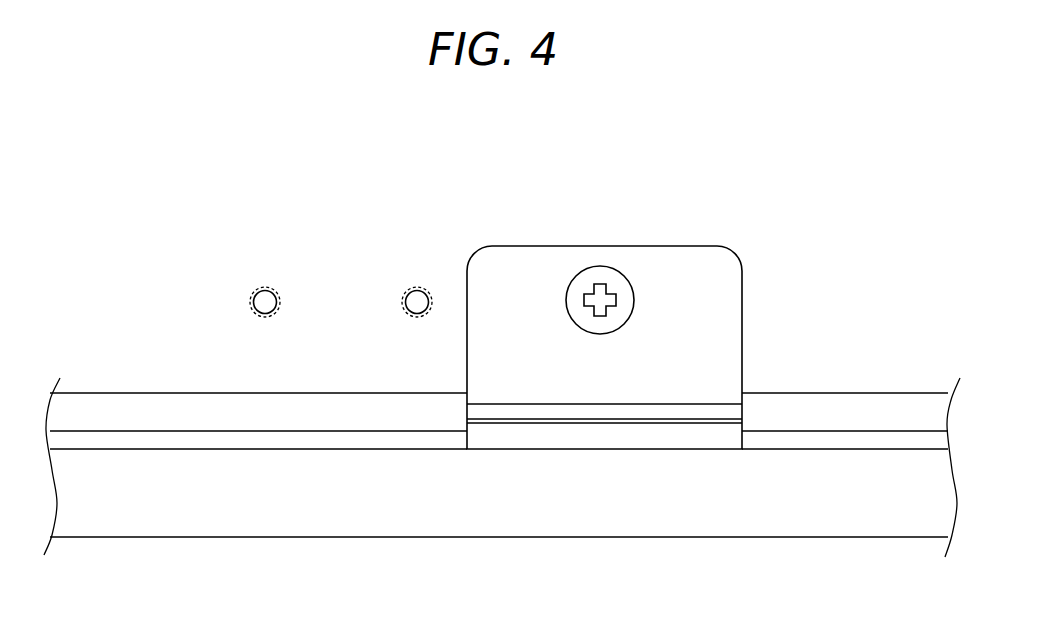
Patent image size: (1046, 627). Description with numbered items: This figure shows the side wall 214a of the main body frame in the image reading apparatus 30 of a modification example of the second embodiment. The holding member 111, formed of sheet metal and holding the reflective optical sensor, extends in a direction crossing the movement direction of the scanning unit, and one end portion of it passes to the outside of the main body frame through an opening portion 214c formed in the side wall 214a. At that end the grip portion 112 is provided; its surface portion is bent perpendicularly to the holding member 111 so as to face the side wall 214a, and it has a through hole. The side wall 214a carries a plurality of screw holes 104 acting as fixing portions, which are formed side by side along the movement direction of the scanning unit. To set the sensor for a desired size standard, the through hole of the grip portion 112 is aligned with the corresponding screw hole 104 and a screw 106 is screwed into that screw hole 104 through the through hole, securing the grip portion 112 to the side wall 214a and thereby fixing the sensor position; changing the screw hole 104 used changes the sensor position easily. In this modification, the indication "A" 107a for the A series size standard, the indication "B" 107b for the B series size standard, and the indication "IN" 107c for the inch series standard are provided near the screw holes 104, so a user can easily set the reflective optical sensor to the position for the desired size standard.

The image reading apparatus 30 is at (796, 214).
The screw hole 104 is at (255, 315).
The screw 106 is at (620, 285).
The indication "A" 107a is at (568, 207).
The indication "B" 107b is at (401, 205).
The indication "IN" 107c is at (266, 200).
The holding member 111 is at (730, 442).
The grip portion 112 is at (708, 340).
The side wall 214a is at (203, 319).
The opening portion 214c is at (162, 440).